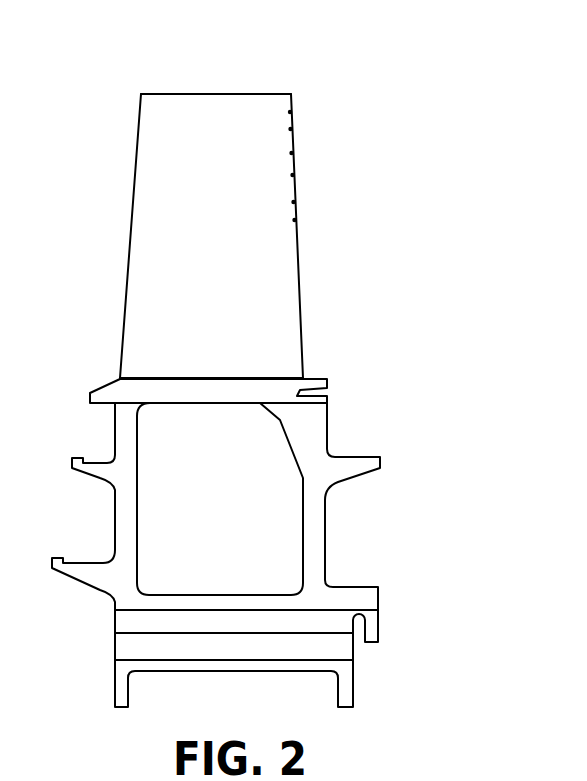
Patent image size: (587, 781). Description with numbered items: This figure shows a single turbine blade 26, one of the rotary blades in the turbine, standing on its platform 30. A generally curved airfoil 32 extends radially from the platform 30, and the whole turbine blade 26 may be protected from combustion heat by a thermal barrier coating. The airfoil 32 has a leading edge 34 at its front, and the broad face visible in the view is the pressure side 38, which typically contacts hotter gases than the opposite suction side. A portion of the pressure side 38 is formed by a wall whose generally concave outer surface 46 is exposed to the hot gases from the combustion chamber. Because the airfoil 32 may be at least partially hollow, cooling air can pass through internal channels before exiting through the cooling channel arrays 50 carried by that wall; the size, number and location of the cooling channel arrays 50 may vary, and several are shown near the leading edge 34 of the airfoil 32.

The turbine blade 26 is at (415, 504).
The platform 30 is at (313, 379).
The airfoil 32 is at (128, 220).
The leading edge 34 is at (240, 93).
The pressure side 38 is at (240, 307).
The outer surface 46 is at (148, 316).
The cooling channel arrays 50 is at (292, 112).